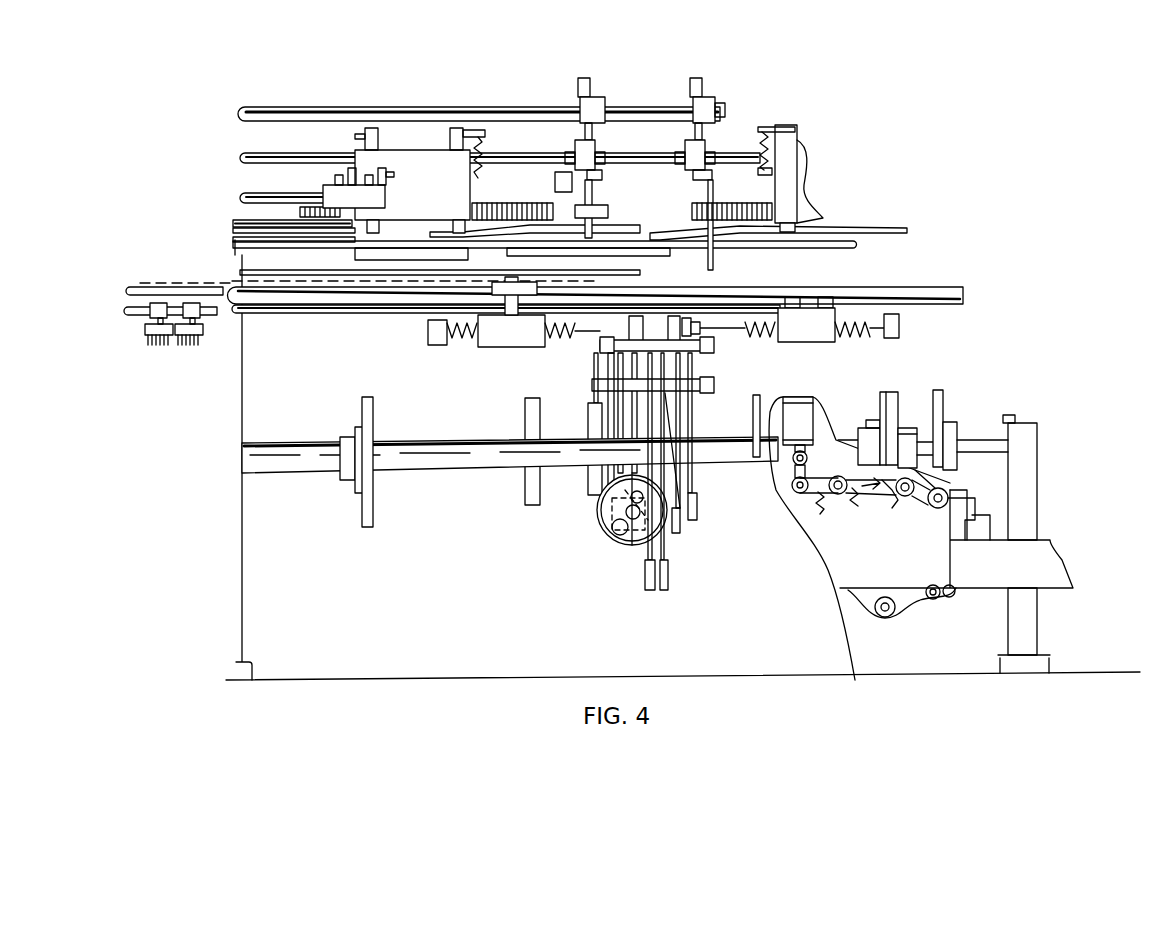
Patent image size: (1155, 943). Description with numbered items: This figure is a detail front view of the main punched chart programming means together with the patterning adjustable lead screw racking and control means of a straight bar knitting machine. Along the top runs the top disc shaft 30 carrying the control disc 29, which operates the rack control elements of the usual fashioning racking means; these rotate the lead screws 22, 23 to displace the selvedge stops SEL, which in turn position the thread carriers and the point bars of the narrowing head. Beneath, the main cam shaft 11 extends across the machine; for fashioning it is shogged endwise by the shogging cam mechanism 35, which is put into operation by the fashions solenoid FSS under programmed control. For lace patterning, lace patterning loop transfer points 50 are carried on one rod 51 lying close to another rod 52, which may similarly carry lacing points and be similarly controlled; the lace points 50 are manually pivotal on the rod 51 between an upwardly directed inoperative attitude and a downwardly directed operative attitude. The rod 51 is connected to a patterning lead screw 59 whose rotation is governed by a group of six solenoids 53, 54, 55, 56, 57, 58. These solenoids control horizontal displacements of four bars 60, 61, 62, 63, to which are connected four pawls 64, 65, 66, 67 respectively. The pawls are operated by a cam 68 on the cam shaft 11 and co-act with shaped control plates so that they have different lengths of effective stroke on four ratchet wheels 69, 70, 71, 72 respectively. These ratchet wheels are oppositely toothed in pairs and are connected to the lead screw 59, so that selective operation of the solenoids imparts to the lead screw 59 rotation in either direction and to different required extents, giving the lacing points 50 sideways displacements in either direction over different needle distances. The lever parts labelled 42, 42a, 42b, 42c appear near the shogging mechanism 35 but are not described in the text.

The top disc shaft 30 is at (478, 107).
The control disc 29 is at (580, 92).
The lead screw 22 is at (553, 181).
The lead screw 23 is at (742, 204).
The selvedge stops SEL is at (457, 222).
The rod 52 is at (181, 290).
The rod 51 is at (133, 316).
The lace patterning loop transfer points 50 is at (168, 338).
The solenoid 57 is at (529, 399).
The lead screw 59 is at (769, 310).
The ratchet wheel 69 is at (633, 320).
The ratchet wheel 70 is at (664, 318).
The ratchet wheel 71 is at (684, 320).
The ratchet wheel 72 is at (700, 322).
The pawl 64 is at (601, 345).
The pawl 65 is at (615, 356).
The pawl 66 is at (706, 330).
The pawl 67 is at (705, 344).
The bar 60 is at (597, 398).
The cam 68 is at (592, 452).
The main cam shaft 11 is at (478, 446).
The solenoid 53 is at (600, 525).
The solenoid 54 is at (628, 548).
The solenoid 55 is at (648, 583).
The solenoid 58 is at (664, 590).
The bar 61 is at (676, 540).
The bar 62 is at (672, 400).
The solenoid 56 is at (698, 518).
The bar 63 is at (700, 398).
The fashions solenoid FSS is at (797, 410).
The shogging cam mechanism 35 is at (843, 437).
The lever 42 is at (905, 495).
The lever arm 42a is at (955, 495).
The roller 42b is at (921, 500).
The lever link 42c is at (872, 502).